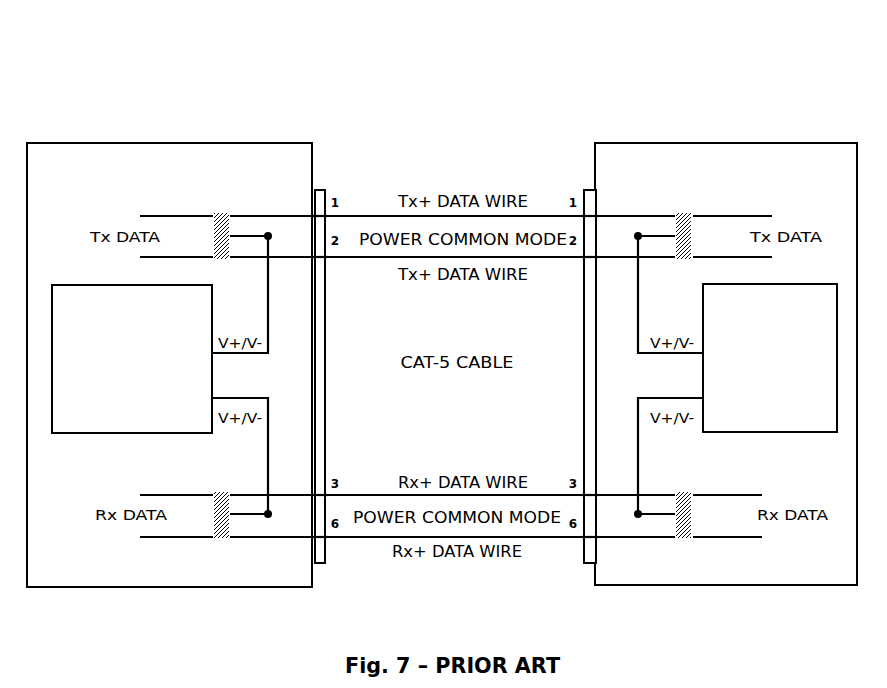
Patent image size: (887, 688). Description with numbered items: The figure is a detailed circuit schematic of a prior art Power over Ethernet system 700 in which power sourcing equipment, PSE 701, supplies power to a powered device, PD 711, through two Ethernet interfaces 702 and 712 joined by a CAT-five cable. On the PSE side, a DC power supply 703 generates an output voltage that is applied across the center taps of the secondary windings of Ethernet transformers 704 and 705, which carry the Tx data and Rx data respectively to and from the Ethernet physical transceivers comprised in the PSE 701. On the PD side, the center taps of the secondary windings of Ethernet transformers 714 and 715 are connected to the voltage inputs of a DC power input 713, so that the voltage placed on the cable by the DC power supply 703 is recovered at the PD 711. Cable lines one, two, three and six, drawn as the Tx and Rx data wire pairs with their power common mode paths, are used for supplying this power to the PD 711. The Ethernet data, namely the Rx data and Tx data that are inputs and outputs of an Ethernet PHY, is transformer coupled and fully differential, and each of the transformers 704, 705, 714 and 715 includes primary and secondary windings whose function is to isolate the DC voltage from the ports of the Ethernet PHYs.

The Power over Ethernet (PoE) system 700 is at (636, 68).
The PSE 701 is at (169, 331).
The Ethernet interface 702 is at (366, 342).
The DC power supply 703 is at (128, 394).
The Ethernet transformer 704 is at (190, 205).
The Ethernet transformer 705 is at (164, 542).
The PD 711 is at (726, 330).
The Ethernet interface 712 is at (539, 342).
The DC power input 713 is at (770, 393).
The Ethernet transformer 714 is at (714, 205).
The Ethernet transformer 715 is at (728, 542).